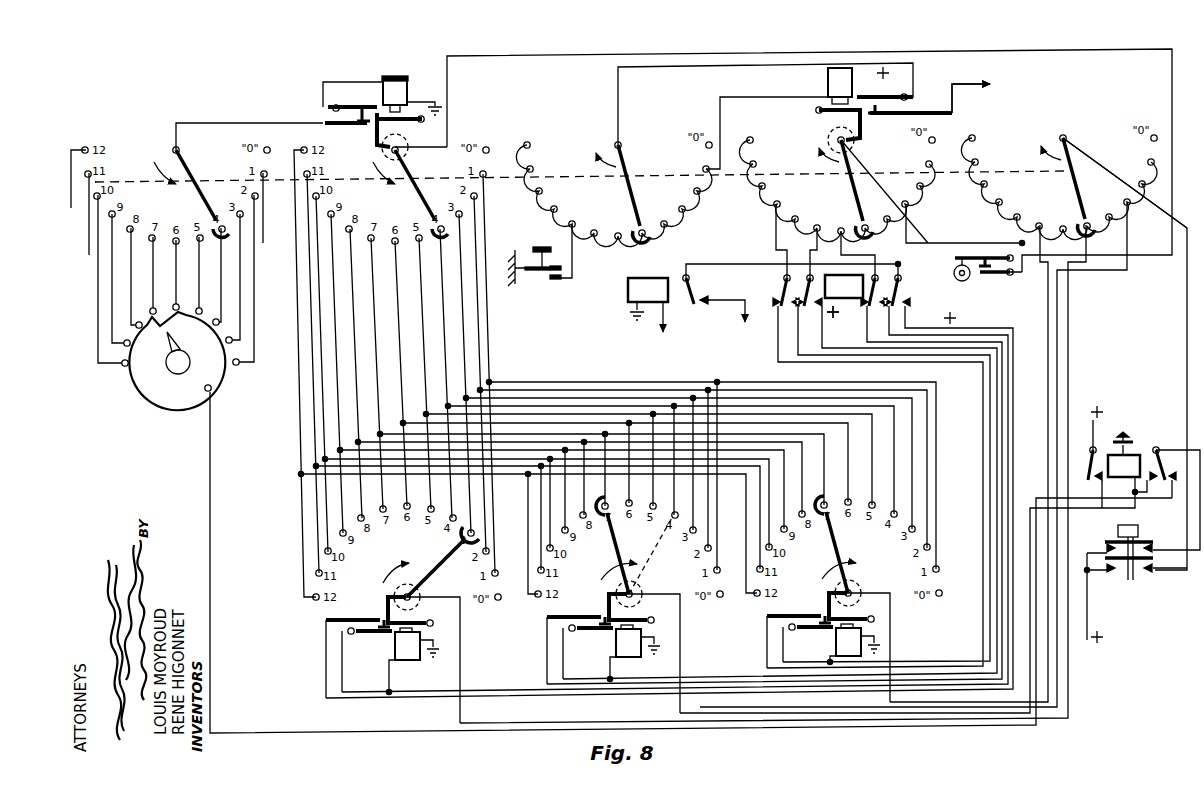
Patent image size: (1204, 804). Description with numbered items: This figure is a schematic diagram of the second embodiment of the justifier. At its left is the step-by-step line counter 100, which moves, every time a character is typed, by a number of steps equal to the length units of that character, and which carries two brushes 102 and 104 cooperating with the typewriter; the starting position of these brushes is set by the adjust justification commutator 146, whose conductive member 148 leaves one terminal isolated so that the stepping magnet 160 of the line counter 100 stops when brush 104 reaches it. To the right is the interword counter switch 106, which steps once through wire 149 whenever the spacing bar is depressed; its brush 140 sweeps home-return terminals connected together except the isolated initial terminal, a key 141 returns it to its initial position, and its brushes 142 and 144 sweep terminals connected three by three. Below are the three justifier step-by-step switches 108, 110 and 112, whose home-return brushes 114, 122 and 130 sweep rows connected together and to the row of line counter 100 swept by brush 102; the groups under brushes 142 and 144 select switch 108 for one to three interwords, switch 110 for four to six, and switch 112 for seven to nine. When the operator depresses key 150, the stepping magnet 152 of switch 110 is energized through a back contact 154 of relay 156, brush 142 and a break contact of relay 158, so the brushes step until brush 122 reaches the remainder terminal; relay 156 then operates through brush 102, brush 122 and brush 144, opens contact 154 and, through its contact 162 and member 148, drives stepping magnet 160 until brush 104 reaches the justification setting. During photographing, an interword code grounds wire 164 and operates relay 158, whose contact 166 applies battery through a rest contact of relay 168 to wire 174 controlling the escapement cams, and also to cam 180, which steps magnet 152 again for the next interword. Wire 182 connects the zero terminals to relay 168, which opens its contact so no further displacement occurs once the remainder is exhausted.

The step-by-step line counter 100 is at (120, 153).
The brush 102 is at (395, 189).
The brush 104 is at (176, 193).
The interword counter switch 106 is at (1125, 170).
The justifier step-by-step switch 108 is at (413, 657).
The justifier step-by-step switch 110 is at (633, 650).
The justifier step-by-step switch 112 is at (848, 645).
The brush 114 is at (407, 556).
The brush 122 is at (629, 552).
The brush 130 is at (848, 551).
The brush 140 is at (614, 189).
The key 141 is at (533, 255).
The brush 142 is at (845, 154).
The brush 144 is at (1059, 182).
The adjust justification commutator 146 is at (180, 357).
The conductive member 148 is at (181, 374).
The wire 149 is at (966, 87).
The key 150 is at (1117, 581).
The stepping magnet 152 is at (640, 650).
The back contact 154 is at (1157, 451).
The relay 156 is at (1124, 466).
The relay 158 is at (818, 290).
The stepping magnet 160 is at (382, 100).
The contact 162 is at (1087, 434).
The wire 164 is at (840, 321).
The contact 166 is at (899, 290).
The relay 168 is at (648, 299).
The wire 174 is at (714, 300).
The cam 180 is at (988, 280).
The wire 182 is at (638, 326).